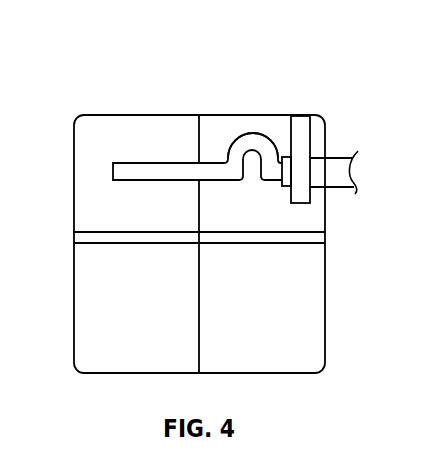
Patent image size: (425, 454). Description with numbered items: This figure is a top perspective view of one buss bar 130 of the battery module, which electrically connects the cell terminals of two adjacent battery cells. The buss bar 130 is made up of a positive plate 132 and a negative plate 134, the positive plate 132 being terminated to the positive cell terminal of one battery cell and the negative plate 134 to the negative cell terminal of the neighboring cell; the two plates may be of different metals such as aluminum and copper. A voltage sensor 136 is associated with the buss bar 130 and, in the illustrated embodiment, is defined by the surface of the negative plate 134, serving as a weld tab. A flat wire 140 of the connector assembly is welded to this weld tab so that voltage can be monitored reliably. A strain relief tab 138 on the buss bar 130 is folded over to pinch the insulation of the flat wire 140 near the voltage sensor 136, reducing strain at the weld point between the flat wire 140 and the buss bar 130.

The buss bar 130 is at (270, 47).
The positive plate 132 is at (310, 207).
The negative plate 134 is at (88, 211).
The voltage sensor 136 is at (150, 160).
The strain relief tab 138 is at (290, 124).
The flat wire 140 is at (113, 171).